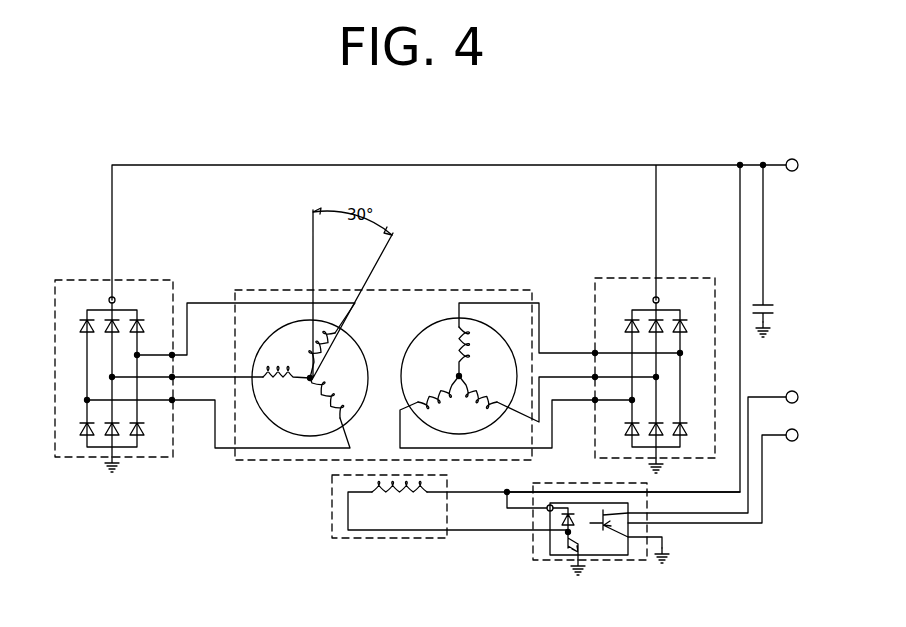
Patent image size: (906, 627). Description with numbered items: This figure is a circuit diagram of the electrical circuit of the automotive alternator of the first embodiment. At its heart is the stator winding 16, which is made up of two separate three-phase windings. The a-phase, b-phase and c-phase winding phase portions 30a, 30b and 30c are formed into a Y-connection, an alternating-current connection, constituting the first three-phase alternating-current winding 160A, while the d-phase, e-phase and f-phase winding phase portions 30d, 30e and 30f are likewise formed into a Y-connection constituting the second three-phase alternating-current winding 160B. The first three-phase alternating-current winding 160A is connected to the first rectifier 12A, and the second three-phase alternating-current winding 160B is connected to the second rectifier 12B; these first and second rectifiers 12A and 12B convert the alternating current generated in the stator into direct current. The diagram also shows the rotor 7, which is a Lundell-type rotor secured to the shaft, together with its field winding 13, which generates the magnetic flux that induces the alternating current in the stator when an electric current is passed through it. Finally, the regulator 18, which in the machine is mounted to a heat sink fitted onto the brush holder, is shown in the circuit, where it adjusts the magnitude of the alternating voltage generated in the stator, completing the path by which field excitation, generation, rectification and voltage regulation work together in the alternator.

The second rectifier 12B is at (160, 278).
The first rectifier 12A is at (612, 278).
The stator 16 is at (448, 290).
The first three-phase alternating-current winding 160A is at (500, 338).
The second three-phase alternating-current winding 160B is at (300, 433).
The a-phase winding phase portion 30a is at (477, 340).
The b-phase winding phase portion 30b is at (478, 410).
The c-phase winding phase portion 30c is at (437, 405).
The d-phase winding phase portion 30d is at (340, 348).
The e-phase winding phase portion 30e is at (343, 398).
The f-phase winding phase portion 30f is at (276, 392).
The rotor 7 is at (338, 540).
The field winding 13 is at (398, 500).
The regulator 18 is at (540, 549).